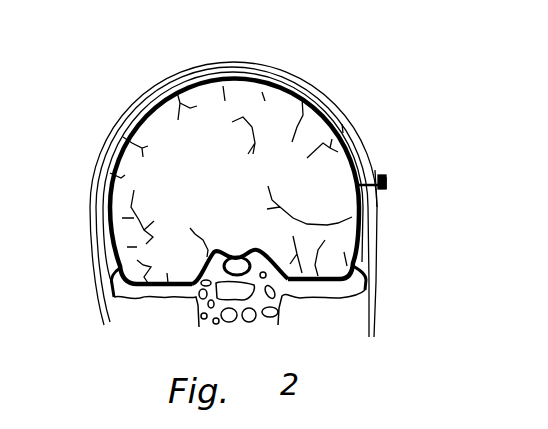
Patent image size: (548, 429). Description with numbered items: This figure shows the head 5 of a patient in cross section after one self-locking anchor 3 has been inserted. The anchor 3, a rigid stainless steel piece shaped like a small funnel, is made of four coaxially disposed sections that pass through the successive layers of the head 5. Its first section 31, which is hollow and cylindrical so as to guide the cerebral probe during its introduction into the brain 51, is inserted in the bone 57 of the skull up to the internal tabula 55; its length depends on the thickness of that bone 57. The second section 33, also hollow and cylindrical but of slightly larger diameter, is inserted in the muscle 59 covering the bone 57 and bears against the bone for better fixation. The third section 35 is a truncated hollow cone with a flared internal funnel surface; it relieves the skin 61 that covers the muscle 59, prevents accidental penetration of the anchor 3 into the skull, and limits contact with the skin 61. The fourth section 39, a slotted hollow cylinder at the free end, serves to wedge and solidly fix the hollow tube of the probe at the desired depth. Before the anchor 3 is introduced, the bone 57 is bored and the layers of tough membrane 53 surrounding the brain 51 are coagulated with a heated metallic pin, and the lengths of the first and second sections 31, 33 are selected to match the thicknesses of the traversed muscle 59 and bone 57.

The head 5 is at (361, 95).
The skin 61 is at (160, 84).
The muscle 59 is at (328, 90).
The tough membrane 53 is at (239, 69).
The internal tabula 55 is at (273, 85).
The brain 51 is at (212, 110).
The bone 57 is at (294, 87).
The anchor 3 is at (396, 180).
The first section 31 is at (372, 181).
The third section 35 is at (389, 184).
The fourth section 39 is at (386, 191).
The second section 33 is at (379, 220).